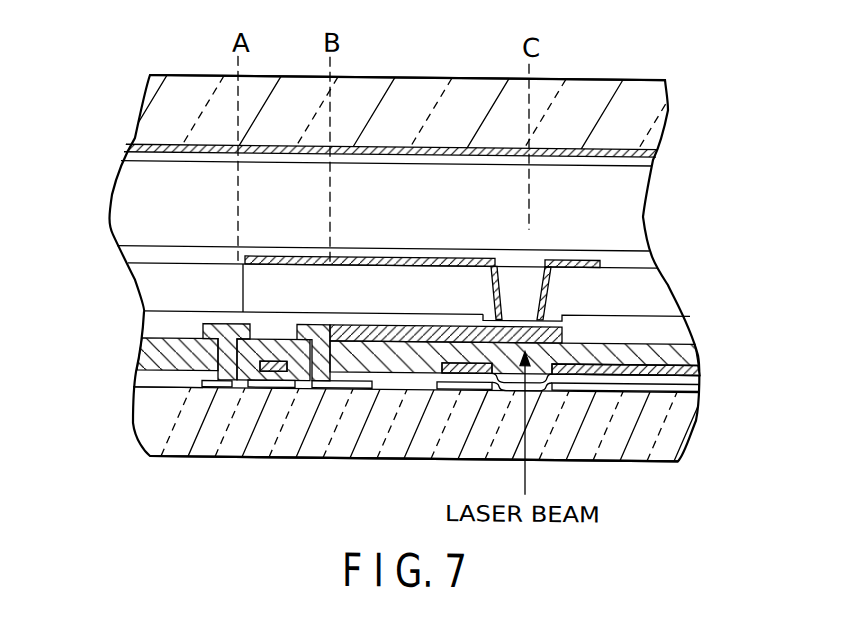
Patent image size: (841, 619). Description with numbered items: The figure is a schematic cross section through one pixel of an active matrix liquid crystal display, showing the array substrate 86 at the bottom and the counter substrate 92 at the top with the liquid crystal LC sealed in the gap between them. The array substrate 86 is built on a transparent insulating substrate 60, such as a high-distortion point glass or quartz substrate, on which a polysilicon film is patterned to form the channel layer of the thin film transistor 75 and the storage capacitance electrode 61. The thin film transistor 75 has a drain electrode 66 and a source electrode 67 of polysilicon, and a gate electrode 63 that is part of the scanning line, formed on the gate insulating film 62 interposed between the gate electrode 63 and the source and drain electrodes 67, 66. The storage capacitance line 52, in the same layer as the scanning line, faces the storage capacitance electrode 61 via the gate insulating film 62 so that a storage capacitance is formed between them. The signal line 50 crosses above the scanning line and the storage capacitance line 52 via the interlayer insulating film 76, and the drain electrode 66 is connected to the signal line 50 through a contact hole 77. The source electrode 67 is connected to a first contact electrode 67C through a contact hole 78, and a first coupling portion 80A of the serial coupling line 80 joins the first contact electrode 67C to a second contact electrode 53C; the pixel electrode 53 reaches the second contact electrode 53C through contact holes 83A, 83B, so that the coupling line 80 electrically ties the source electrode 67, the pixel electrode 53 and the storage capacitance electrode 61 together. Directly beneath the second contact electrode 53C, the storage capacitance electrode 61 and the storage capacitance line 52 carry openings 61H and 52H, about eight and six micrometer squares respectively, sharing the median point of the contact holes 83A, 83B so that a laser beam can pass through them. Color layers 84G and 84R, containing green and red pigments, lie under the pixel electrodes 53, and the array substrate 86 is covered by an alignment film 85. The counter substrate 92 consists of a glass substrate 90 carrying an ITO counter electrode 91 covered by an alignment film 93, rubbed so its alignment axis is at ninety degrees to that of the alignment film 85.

The glass substrate 90 is at (657, 118).
The counter electrode 91 is at (572, 144).
The counter substrate 92 is at (124, 116).
The alignment film 93 is at (122, 155).
The liquid crystal LC is at (120, 198).
The alignment film 85 is at (128, 255).
The green color layer 84G is at (185, 272).
The red color layer 84R is at (240, 264).
The pixel electrode 53 is at (392, 254).
The second contact electrode 53C is at (530, 312).
The contact hole 83B is at (535, 264).
The contact hole 83A is at (488, 319).
The contact hole 78 is at (327, 336).
The interlayer insulating film 76 is at (143, 350).
The contact hole 77 is at (170, 340).
The signal line 50 is at (222, 322).
The gate electrode 63 is at (273, 357).
The source electrode 67 is at (322, 385).
The first contact electrode 67C is at (312, 323).
The serial coupling line 80 is at (437, 322).
The first coupling portion 80A is at (400, 371).
The storage capacitance line 52 is at (447, 369).
The storage capacitance electrode 61 is at (468, 383).
The drain electrode 66 is at (228, 386).
The thin film transistor 75 is at (280, 398).
The gate insulating film 62 is at (135, 380).
The opening 52H is at (522, 385).
The opening 61H is at (523, 385).
The transparent insulating substrate 60 is at (693, 402).
The array substrate 86 is at (118, 424).